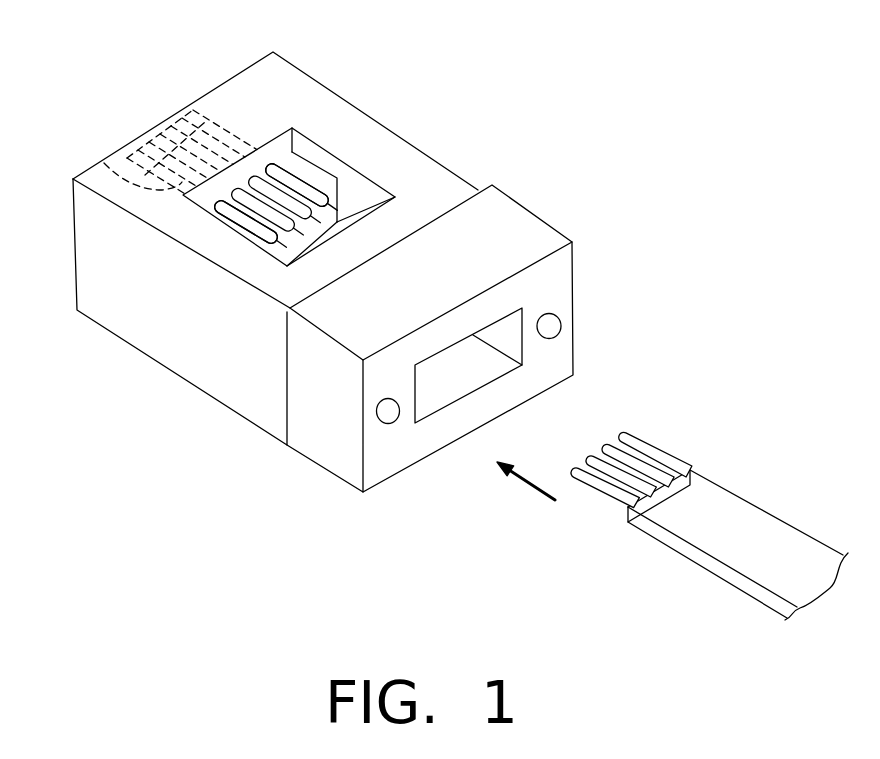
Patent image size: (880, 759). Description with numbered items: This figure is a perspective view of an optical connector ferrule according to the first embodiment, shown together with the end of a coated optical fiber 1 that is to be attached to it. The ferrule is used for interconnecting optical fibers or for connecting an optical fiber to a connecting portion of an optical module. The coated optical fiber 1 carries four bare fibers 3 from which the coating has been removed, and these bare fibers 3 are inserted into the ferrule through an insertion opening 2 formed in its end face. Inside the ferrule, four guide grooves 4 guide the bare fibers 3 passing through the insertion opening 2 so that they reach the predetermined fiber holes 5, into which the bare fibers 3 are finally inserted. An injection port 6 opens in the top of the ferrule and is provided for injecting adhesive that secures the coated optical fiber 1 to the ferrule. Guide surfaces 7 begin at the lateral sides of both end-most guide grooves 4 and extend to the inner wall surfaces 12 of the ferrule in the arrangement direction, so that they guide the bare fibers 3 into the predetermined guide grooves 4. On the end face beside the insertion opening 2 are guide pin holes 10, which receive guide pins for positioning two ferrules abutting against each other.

The coated optical fiber 1 is at (753, 507).
The insertion opening 2 is at (510, 343).
The bare fibers 3 is at (654, 450).
The guide grooves 4 is at (323, 207).
The fiber holes 5 is at (231, 128).
The injection port 6 is at (368, 200).
The guide surfaces 7 is at (300, 167).
The guide pin holes 10 is at (561, 326).
The inner wall surfaces 12 is at (328, 160).